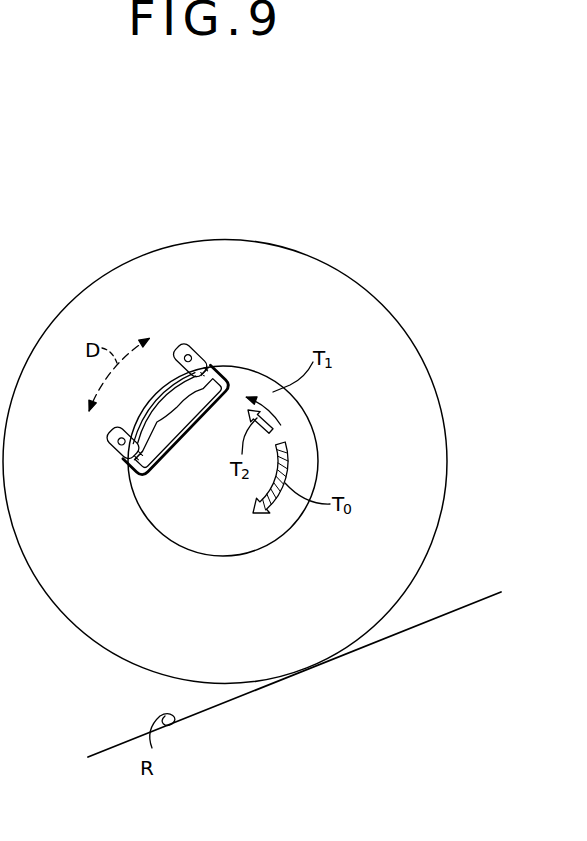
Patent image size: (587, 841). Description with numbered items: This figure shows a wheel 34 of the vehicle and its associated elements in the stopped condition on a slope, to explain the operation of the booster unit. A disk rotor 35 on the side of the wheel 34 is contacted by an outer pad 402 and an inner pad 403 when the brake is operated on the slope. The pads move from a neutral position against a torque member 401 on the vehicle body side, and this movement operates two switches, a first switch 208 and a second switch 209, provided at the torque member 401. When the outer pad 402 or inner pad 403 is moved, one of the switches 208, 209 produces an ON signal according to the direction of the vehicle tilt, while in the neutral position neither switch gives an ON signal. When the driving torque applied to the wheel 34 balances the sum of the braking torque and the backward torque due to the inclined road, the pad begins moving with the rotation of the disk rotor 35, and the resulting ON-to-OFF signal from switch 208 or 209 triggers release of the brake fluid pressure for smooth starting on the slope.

The wheel 34 is at (337, 270).
The disk rotor 35 is at (295, 417).
The second switch 209 is at (220, 368).
The torque member 401 is at (203, 355).
The outer pad 402 is at (153, 422).
The inner pad 403 is at (112, 436).
The first switch 208 is at (133, 463).